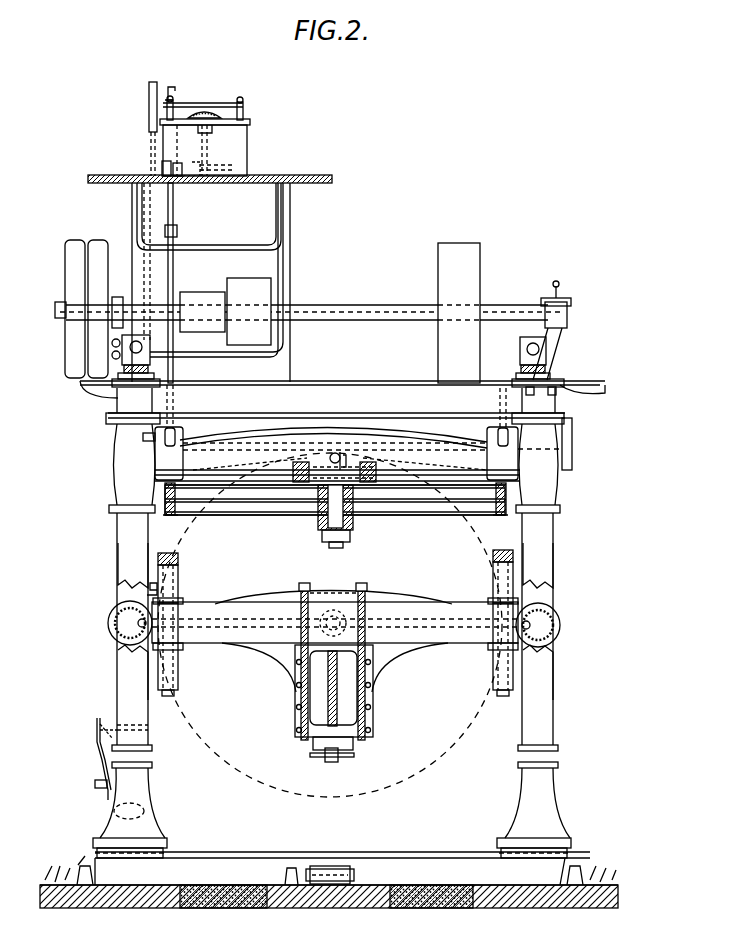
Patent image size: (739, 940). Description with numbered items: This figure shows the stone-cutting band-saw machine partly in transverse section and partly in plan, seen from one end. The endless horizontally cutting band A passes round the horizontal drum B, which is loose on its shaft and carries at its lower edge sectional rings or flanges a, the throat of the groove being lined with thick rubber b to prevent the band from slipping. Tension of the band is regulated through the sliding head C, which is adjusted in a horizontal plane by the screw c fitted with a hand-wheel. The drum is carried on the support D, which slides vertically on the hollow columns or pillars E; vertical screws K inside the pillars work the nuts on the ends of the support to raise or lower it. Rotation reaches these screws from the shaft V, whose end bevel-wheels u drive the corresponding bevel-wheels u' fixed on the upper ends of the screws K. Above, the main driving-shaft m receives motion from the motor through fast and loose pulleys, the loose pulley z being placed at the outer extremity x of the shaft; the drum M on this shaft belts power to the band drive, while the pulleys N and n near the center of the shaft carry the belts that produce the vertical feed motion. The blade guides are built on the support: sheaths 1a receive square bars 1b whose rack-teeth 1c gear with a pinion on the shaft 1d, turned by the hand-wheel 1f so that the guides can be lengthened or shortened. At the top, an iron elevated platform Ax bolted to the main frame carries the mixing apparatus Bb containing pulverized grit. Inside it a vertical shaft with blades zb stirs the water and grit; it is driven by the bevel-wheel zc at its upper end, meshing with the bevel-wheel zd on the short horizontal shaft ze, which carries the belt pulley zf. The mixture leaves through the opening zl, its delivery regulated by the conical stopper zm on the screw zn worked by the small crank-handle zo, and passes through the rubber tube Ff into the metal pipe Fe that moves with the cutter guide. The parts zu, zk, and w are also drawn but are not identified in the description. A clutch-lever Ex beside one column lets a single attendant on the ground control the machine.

The mixing apparatus Bb is at (205, 147).
The pulley zf is at (146, 129).
The crank-handle zo is at (170, 86).
The bevel-wheel zc is at (203, 105).
The bevel-wheel zd is at (234, 101).
The short horizontal shaft ze is at (204, 103).
The screw zn is at (182, 149).
The rod zu is at (206, 150).
The opening zl is at (163, 165).
The conical stopper zm is at (180, 164).
The pipe zk is at (197, 165).
The blades zb is at (219, 161).
The elevated platform Ax is at (210, 172).
The rubber tube Ff is at (211, 283).
The metal pipe Fe is at (213, 270).
The loose pulley z is at (86, 309).
The outer extremity of driving shaft x is at (53, 310).
The driving-shaft m is at (310, 312).
The pulley n is at (202, 312).
The pulley N is at (249, 311).
The drum M is at (459, 313).
The shaft V is at (338, 361).
The bevel-wheel u is at (360, 330).
The bevel-wheel u' is at (315, 354).
The bolt w is at (534, 382).
The hollow columns E is at (332, 623).
The drum B is at (331, 625).
The support D is at (336, 535).
The sheath 1a is at (332, 540).
The square bar 1b is at (328, 565).
The rack-teeth 1c is at (336, 453).
The shaft 1d is at (407, 449).
The hand-wheel 1f is at (547, 444).
The rubber lining b is at (334, 499).
The cutting band A is at (333, 500).
The rings or flanges a is at (335, 521).
The sliding head C is at (335, 612).
The screw c is at (333, 589).
The vertical screw K is at (334, 624).
The clutch-lever Ex is at (106, 759).